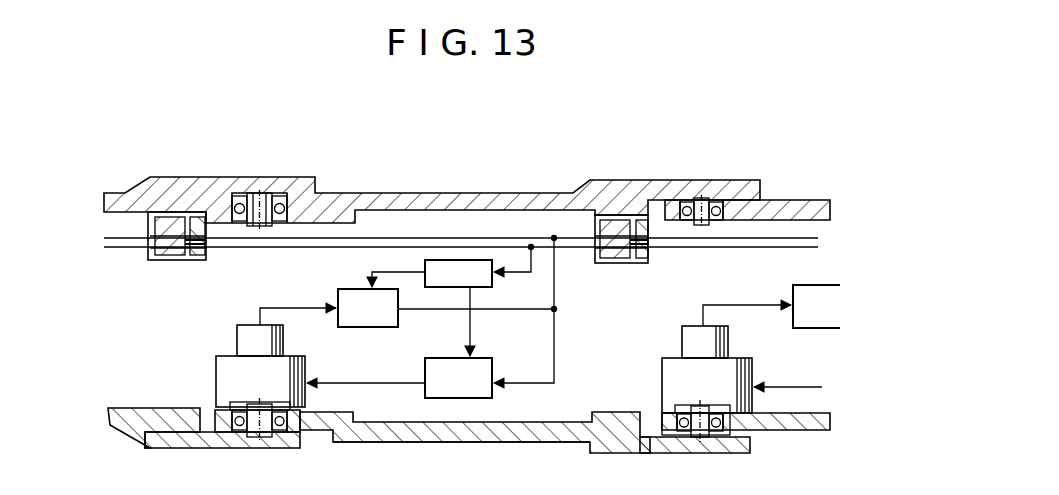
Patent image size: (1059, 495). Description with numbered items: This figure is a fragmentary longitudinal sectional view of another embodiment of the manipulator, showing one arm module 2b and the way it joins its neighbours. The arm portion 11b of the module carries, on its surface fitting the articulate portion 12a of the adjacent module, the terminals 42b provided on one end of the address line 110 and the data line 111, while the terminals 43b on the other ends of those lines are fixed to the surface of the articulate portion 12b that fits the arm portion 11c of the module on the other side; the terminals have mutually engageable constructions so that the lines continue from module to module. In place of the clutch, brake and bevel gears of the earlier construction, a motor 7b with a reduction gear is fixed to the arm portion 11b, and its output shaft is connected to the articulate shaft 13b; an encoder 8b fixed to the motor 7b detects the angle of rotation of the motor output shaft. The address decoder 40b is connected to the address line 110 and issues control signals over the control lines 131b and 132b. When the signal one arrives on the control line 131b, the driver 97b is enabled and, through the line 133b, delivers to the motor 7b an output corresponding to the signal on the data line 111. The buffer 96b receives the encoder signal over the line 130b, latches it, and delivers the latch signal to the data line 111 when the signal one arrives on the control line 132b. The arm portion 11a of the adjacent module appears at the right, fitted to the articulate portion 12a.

The arm module 2b is at (485, 443).
The motor 7b is at (216, 373).
The encoder 8b is at (237, 335).
The arm portion 11a is at (792, 432).
The arm portion 11b is at (452, 443).
The arm portion 11c is at (113, 427).
The articulate portion 12a is at (690, 453).
The articulate portion 12b is at (212, 448).
The articulate shaft 13b is at (255, 424).
The address decoder 40b is at (484, 262).
The terminals 42b is at (620, 225).
The terminals 43b is at (178, 222).
The buffer 96b is at (344, 290).
The driver 97b is at (488, 394).
The address line 110 is at (440, 247).
The data line 111 is at (480, 238).
The line 130b is at (273, 307).
The control line 131b is at (473, 335).
The control line 132b is at (392, 272).
The line 133b is at (373, 382).